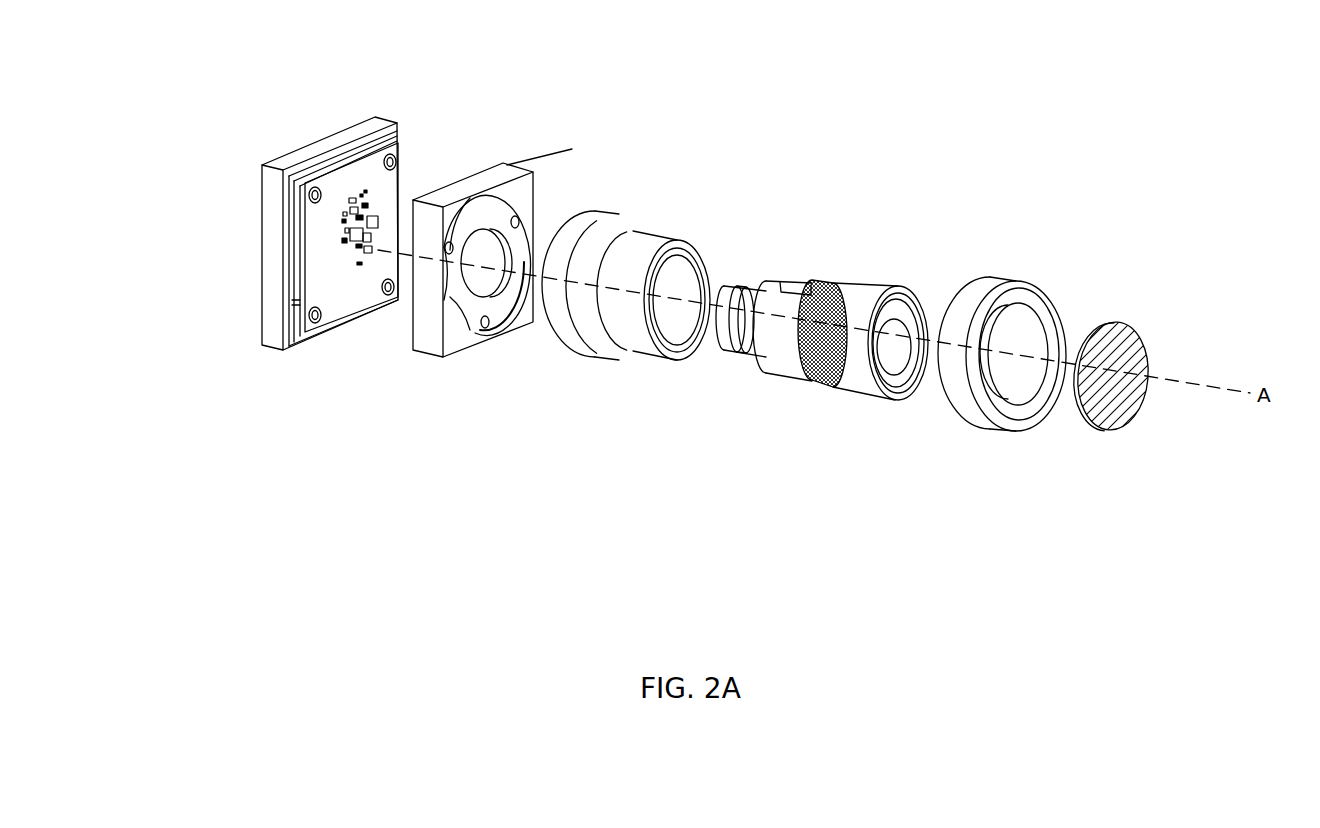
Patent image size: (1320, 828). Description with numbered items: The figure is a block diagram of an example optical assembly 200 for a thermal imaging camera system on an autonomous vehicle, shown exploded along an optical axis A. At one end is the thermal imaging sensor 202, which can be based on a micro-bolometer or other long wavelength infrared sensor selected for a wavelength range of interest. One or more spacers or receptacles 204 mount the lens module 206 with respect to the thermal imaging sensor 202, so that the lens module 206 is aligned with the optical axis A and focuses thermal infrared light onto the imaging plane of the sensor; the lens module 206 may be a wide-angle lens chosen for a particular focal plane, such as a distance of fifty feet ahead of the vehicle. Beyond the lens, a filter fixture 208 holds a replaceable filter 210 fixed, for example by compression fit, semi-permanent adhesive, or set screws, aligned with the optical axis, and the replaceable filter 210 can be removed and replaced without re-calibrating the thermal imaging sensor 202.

The optical assembly 200 is at (184, 110).
The thermal imaging sensor 202 is at (368, 118).
The spacers or receptacles 204 is at (650, 232).
The lens module 206 is at (833, 288).
The filter fixture 208 is at (1012, 278).
The replaceable filter 210 is at (1137, 327).